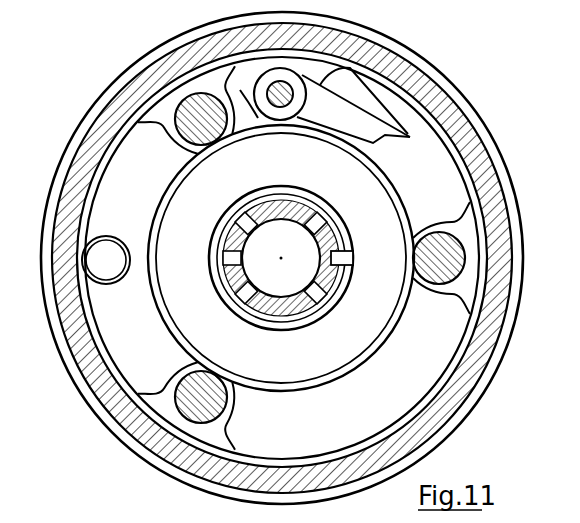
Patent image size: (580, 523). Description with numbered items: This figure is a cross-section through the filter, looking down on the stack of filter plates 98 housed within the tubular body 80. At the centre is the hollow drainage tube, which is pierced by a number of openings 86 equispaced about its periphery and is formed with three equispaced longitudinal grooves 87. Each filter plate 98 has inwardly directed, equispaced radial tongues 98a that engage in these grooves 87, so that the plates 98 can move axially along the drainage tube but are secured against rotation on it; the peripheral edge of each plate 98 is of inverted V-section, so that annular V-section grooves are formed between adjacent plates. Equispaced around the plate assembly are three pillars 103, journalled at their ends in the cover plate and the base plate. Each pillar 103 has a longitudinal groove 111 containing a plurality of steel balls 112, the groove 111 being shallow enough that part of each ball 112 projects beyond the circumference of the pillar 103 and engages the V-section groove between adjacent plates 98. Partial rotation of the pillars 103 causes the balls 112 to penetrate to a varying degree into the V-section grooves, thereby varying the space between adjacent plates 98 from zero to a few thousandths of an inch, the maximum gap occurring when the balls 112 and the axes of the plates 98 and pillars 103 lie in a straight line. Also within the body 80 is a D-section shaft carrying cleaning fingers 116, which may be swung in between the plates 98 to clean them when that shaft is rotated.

The tubular body 80 is at (460, 383).
The openings 86 is at (318, 302).
The longitudinal grooves 87 is at (353, 262).
The filter plates 98 is at (367, 203).
The radial tongues 98a is at (248, 312).
The pillars 103 is at (233, 412).
The longitudinal groove 111 is at (199, 371).
The steel balls 112 is at (203, 371).
The cleaning fingers 116 is at (392, 131).